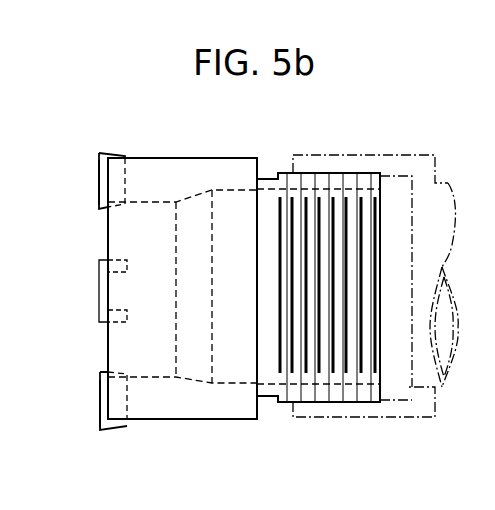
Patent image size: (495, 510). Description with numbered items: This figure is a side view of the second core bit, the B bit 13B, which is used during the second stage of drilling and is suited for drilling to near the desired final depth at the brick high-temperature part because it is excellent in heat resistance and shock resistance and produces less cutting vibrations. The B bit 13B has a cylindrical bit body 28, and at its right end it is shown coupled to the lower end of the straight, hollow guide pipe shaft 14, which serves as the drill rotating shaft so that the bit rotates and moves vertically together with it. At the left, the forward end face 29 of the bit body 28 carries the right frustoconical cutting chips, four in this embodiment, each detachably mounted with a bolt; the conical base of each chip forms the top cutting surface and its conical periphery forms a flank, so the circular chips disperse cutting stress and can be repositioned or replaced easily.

The B bit 13B is at (242, 140).
The guide pipe shaft 14 is at (425, 192).
The bit body 28 is at (218, 410).
The forward end face 29 is at (108, 342).